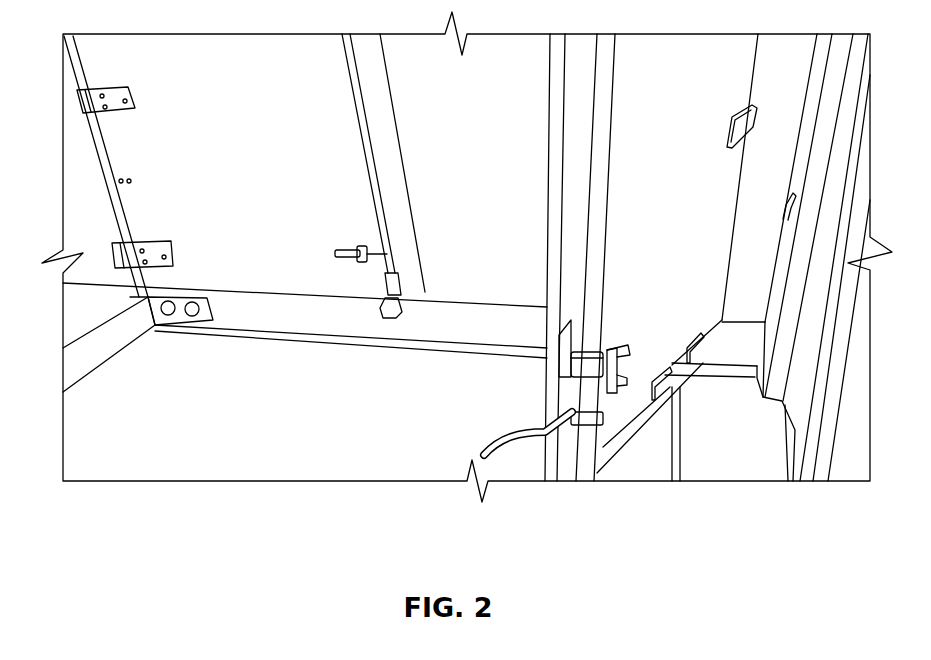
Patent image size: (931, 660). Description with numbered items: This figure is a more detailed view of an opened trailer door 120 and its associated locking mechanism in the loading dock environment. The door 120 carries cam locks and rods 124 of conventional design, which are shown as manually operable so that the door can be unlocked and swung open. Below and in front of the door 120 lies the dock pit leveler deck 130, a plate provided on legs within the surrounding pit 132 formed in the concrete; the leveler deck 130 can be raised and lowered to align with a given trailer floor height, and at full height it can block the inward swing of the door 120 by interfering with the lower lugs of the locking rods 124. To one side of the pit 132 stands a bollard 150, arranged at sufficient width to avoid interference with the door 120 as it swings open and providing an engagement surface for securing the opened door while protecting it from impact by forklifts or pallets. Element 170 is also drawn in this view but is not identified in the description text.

The door 120 is at (214, 135).
The cam locks and rods 124 is at (582, 433).
The pit leveler deck 130 is at (259, 448).
The pit 132 is at (102, 347).
The bollard 150 is at (834, 442).
The beam 170 is at (717, 441).